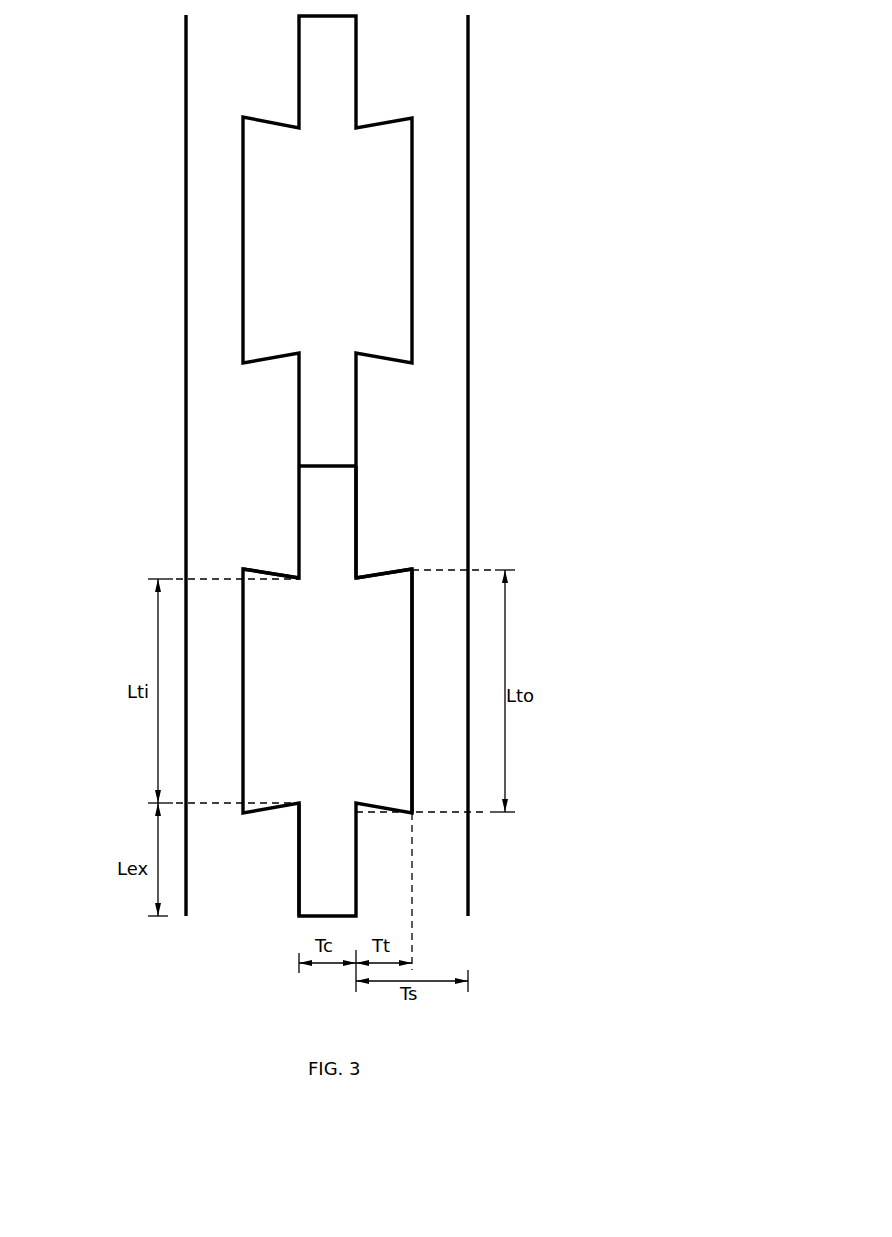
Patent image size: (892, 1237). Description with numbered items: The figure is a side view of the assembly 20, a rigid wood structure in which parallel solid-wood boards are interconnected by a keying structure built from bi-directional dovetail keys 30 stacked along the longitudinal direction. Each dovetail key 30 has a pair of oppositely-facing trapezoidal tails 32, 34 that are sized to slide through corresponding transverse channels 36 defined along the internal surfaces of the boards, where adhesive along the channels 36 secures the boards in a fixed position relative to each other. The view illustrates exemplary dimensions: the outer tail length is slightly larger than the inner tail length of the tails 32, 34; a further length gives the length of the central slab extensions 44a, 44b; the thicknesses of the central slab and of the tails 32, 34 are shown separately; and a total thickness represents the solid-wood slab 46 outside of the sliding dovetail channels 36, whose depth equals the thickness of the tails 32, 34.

The assembly 20 is at (378, 497).
The dovetail key 30 is at (305, 497).
The trapezoidal tail 32 is at (383, 568).
The trapezoidal tail 34 is at (272, 572).
The transverse channel 36 is at (412, 690).
The central slab extension 44a is at (356, 518).
The central slab extension 44b is at (297, 859).
The solid-wood slab 46 is at (448, 859).